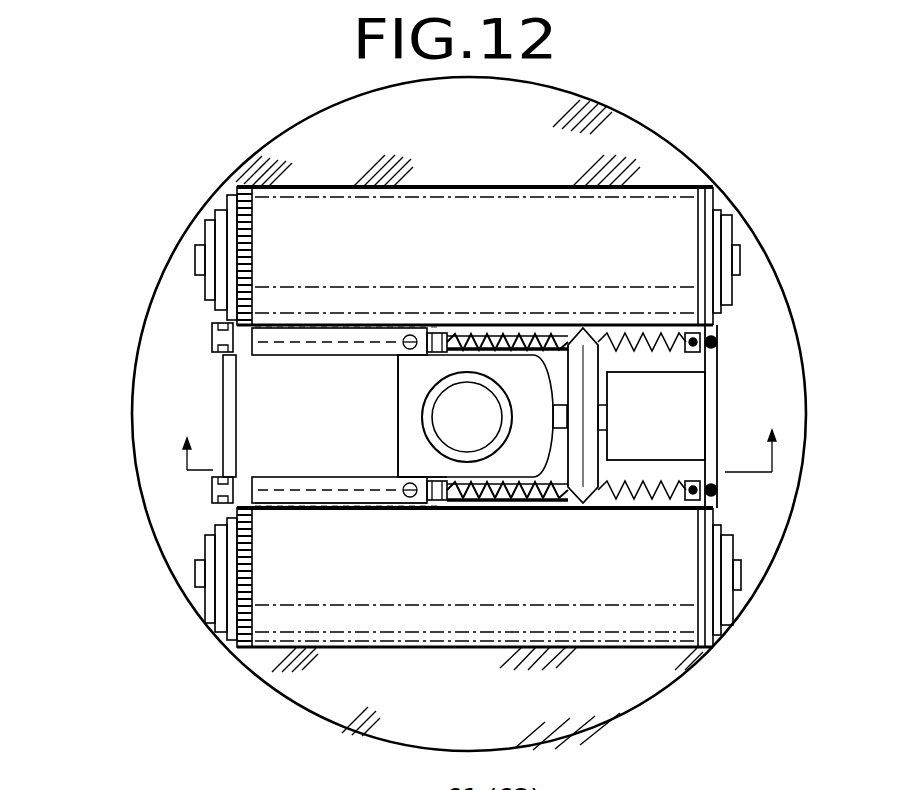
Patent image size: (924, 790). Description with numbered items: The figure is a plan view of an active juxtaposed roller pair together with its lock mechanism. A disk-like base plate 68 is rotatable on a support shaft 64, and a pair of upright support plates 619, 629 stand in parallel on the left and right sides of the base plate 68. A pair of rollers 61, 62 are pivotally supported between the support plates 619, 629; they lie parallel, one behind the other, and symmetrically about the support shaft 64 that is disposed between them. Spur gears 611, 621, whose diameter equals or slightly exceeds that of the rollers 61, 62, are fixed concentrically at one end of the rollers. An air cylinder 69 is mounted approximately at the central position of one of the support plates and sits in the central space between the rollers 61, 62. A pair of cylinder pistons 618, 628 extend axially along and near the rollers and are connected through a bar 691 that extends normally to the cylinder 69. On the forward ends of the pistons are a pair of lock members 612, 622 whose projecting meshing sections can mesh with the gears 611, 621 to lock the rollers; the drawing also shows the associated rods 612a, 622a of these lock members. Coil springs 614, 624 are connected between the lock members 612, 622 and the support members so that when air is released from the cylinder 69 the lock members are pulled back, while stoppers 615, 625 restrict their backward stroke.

The base plate 68 is at (322, 130).
The roller 61 is at (412, 225).
The roller 62 is at (413, 617).
The spur gear 611 is at (247, 257).
The spur gear 621 is at (233, 578).
The lock member 612 is at (359, 330).
The upper rod 612a is at (217, 340).
The lock member 622 is at (375, 497).
The lower rod 622a is at (220, 490).
The support plate 619 is at (228, 420).
The stopper 615 is at (445, 357).
The stopper 625 is at (443, 476).
The support shaft 64 is at (423, 417).
The cylinder piston 618 is at (540, 347).
The cylinder piston 628 is at (477, 507).
The coil spring 614 is at (597, 350).
The bar 691 is at (585, 447).
The support plate 629 is at (713, 418).
The air cylinder 69 is at (637, 448).
The coil spring 624 is at (645, 505).